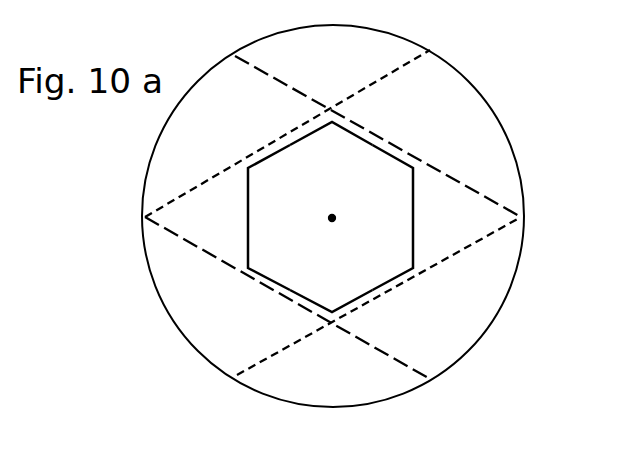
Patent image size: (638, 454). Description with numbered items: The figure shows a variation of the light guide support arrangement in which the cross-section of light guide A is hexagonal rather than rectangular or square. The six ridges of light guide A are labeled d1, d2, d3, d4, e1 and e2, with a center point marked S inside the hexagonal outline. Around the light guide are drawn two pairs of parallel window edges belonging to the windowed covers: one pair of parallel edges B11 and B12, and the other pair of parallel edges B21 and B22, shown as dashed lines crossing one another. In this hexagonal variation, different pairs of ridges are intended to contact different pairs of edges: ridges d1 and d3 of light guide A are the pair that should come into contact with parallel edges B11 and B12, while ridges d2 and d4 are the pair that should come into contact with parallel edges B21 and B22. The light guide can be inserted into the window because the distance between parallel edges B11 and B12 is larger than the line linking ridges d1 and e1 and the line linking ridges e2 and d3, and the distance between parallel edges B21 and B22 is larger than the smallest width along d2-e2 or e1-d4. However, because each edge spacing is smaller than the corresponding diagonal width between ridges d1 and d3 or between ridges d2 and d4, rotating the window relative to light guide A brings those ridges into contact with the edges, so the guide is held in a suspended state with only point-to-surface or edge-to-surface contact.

The light guide A is at (385, 141).
The center point S is at (332, 218).
The parallel edge B11 is at (380, 83).
The parallel edge B12 is at (478, 240).
The parallel edge B21 is at (478, 193).
The parallel edge B22 is at (398, 355).
The ridge d1 is at (269, 181).
The ridge d2 is at (269, 254).
The ridge d3 is at (393, 254).
The ridge d4 is at (393, 181).
The ridge e1 is at (331, 297).
The ridge e2 is at (331, 141).